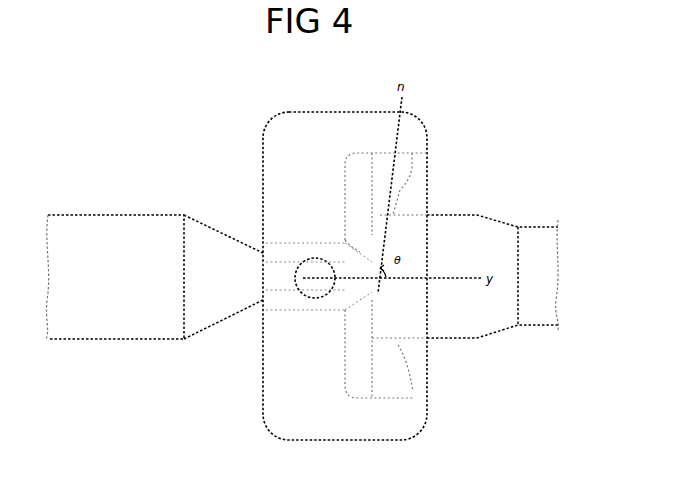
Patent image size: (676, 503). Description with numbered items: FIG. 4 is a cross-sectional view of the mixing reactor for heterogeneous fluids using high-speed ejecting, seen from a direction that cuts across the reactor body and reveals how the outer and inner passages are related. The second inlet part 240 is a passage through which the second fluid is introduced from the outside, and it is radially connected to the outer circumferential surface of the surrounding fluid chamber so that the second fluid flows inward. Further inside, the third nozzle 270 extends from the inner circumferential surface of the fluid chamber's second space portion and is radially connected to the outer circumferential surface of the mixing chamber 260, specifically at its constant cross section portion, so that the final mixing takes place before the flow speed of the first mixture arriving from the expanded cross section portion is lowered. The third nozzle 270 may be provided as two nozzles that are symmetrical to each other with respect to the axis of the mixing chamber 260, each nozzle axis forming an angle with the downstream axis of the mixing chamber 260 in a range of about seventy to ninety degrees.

The second inlet part 240 is at (305, 297).
The mixing chamber 260 is at (450, 215).
The third nozzle 270 is at (417, 170).